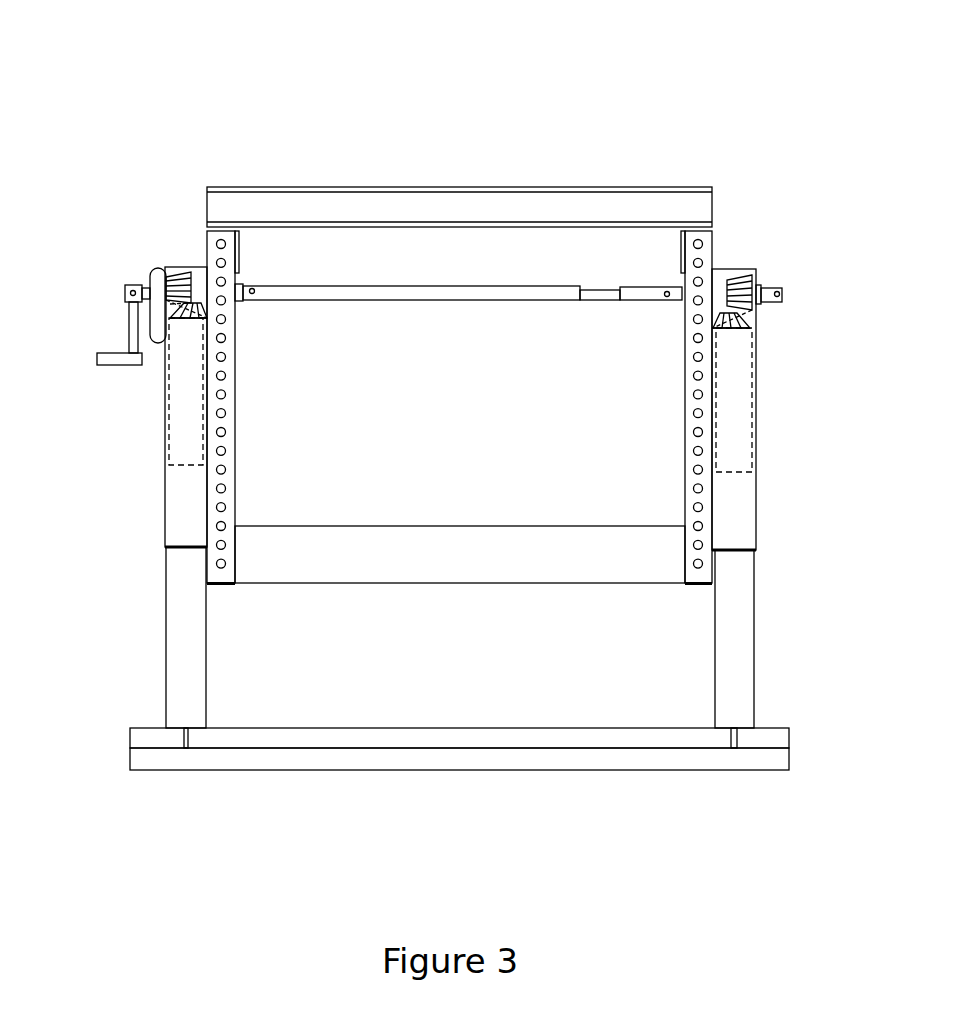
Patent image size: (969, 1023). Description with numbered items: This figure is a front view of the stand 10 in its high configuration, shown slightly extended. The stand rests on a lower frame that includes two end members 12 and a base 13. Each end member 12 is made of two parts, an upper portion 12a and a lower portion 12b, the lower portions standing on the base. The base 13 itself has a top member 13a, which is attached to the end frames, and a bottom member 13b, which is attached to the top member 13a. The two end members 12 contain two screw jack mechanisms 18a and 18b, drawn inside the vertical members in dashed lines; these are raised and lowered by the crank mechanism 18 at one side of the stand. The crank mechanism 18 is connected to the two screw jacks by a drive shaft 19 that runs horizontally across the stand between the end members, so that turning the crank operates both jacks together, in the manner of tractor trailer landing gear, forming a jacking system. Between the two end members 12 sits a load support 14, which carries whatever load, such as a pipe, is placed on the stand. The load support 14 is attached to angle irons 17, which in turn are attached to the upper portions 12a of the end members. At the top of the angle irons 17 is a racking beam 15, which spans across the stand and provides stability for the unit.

The stand 10 is at (377, 132).
The end member 12 is at (153, 496).
The upper portion 12a is at (165, 430).
The lower portion 12b is at (173, 622).
The base 13 is at (470, 793).
The top member 13a is at (437, 730).
The bottom member 13b is at (343, 775).
The load support 14 is at (467, 537).
The racking beam 15 is at (497, 202).
The angle iron 17 is at (246, 365).
The crank mechanism 18 is at (142, 278).
The screw jack mechanism 18a is at (188, 278).
The screw jack mechanism 18b is at (735, 280).
The drive shaft 19 is at (379, 302).